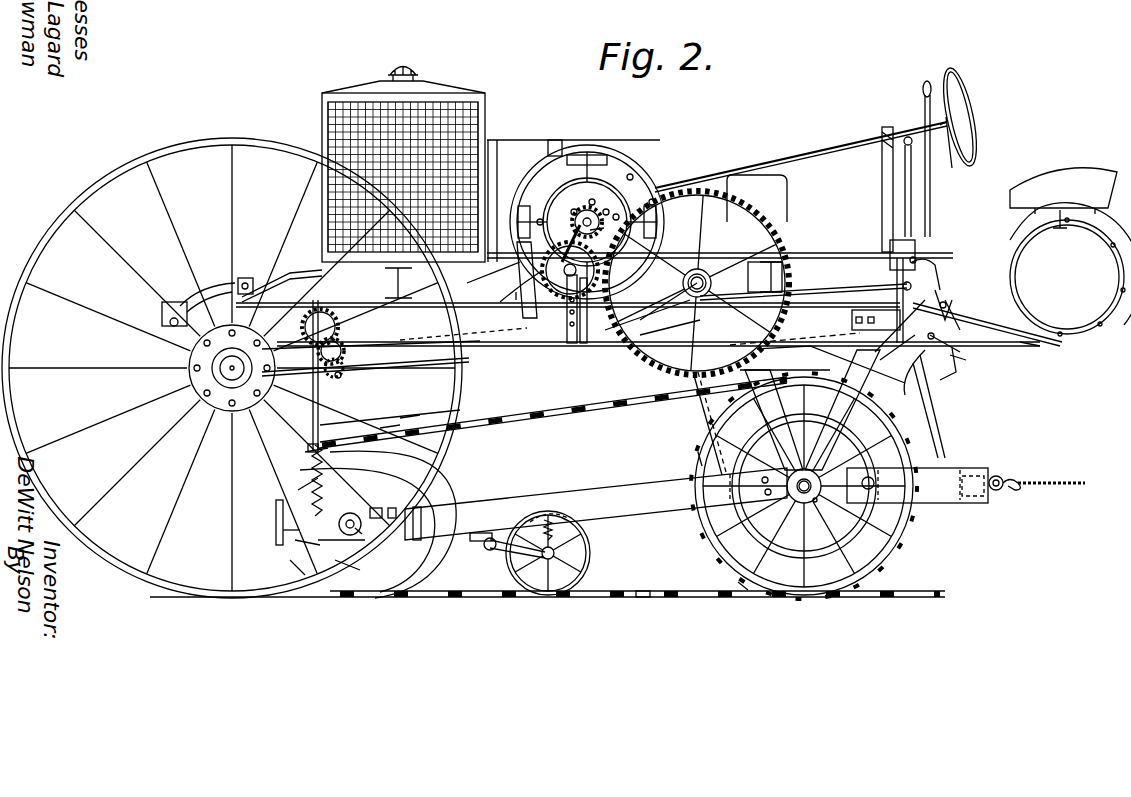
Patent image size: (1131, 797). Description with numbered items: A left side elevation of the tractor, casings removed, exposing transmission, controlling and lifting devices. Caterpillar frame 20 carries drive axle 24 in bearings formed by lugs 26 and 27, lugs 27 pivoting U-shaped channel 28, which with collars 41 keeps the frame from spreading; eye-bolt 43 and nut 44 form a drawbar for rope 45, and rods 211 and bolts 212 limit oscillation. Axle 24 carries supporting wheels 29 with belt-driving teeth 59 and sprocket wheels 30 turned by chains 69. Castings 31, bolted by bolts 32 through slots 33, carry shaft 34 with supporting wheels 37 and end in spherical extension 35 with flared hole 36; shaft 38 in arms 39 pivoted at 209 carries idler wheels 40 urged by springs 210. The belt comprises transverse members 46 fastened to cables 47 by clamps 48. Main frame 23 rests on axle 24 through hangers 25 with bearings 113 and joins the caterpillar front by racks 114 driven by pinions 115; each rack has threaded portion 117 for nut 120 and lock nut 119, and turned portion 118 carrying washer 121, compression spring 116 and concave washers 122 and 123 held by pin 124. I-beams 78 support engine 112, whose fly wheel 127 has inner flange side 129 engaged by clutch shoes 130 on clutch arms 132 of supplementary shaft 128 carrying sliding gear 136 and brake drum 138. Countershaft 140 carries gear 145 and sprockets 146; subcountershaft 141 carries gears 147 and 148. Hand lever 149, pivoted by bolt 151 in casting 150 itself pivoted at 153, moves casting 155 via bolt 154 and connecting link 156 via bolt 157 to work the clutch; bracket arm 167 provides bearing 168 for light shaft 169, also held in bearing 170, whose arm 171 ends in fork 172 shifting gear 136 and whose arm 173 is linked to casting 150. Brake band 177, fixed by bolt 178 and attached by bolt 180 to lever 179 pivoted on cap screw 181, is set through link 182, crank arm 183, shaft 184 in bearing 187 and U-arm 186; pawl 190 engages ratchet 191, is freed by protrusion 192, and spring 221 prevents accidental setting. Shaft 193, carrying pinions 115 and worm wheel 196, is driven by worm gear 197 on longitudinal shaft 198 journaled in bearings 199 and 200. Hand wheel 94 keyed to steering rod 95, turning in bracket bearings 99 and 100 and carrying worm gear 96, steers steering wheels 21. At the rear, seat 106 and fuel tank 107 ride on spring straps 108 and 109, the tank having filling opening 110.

The caterpillar frame 20 is at (466, 528).
The steering wheels 21 is at (232, 600).
The main frame member 23 is at (495, 347).
The drive axle 24 is at (800, 492).
The bracket 25 is at (768, 432).
The lug 26 is at (748, 520).
The lug 27 is at (838, 494).
The U-shaped channel 28 is at (945, 503).
The supporting wheel 29 is at (700, 458).
The drive sprocket wheel 30 is at (712, 441).
The casting 31 is at (358, 532).
The bolt 32 is at (382, 506).
The elongated slot 33 is at (448, 484).
The axial shaft 34 is at (352, 566).
The extension 35 is at (278, 532).
The vertical circular hole 36 is at (347, 516).
The supporting wheel 37 is at (404, 482).
The axial shaft 38 is at (562, 518).
The arm 39 is at (510, 533).
The idler wheel 40 is at (592, 553).
The collar 41 is at (340, 541).
The eye-bolt 43 is at (998, 476).
The nut 44 is at (1006, 490).
The rope 45 is at (1040, 481).
The transverse member 46 is at (513, 600).
The wire cable 47 is at (440, 594).
The clamp 48 is at (642, 592).
The tooth 59 is at (740, 585).
The chain 69 is at (700, 410).
The I-beam 78 is at (398, 298).
The hand wheel 94 is at (972, 85).
The steering rod 95 is at (800, 150).
The worm gear 96 is at (246, 277).
The bracket bearing 99 is at (290, 272).
The bracket bearing 100 is at (887, 126).
The operator's seat 106 is at (1060, 182).
The fuel tank 107 is at (1012, 268).
The spring strap 108 is at (982, 320).
The spring strap 109 is at (1108, 252).
The opening 110 is at (1054, 228).
The engine 112 is at (498, 188).
The short bearing 113 is at (815, 503).
The rack 114 is at (320, 396).
The pinion 115 is at (323, 316).
The spring 116 is at (325, 482).
The threaded portion 117 is at (360, 420).
The turned portion 118 is at (298, 500).
The lock nut 119 is at (410, 415).
The nut 120 is at (390, 425).
The flat washer 121 is at (308, 452).
The concave washer 122 is at (276, 516).
The concave washer 123 is at (305, 541).
The pin 124 is at (295, 568).
The fly wheel 127 is at (606, 226).
The supplementary shaft 128 is at (630, 175).
The inner side of fly wheel flange 129 is at (574, 210).
The shoe 130 is at (520, 200).
The clutch arm 132 is at (606, 210).
The gear 136 is at (555, 140).
The brake drum 138 is at (592, 200).
The countershaft 140 is at (705, 272).
The subcountershaft 141 is at (584, 346).
The gear 145 is at (790, 226).
The sprocket 146 is at (730, 303).
The gear 147 is at (516, 296).
The gear 148 is at (532, 320).
The hand lever 149 is at (922, 100).
The casting 150 is at (946, 306).
The bolt 151 is at (940, 372).
The pivot 153 is at (840, 350).
The bolt 154 is at (955, 380).
The casting 155 is at (912, 385).
The connecting link 156 is at (895, 355).
The bolt 157 is at (905, 376).
The bracket arm 167 is at (893, 243).
The bearing 168 is at (925, 255).
The light shaft 169 is at (800, 262).
The bearing 170 is at (660, 318).
The arm 171 is at (652, 200).
The fork 172 is at (572, 212).
The arm 173 is at (914, 210).
The brake band 177 is at (616, 215).
The bolt 178 is at (540, 219).
The lever 179 is at (522, 305).
The bolt 180 is at (527, 280).
The cap screw 181 is at (500, 272).
The link 182 is at (812, 296).
The crank arm 183 is at (903, 286).
The shaft 184 is at (825, 342).
The U-arm 186 is at (945, 275).
The bearing 187 is at (852, 318).
The pawl 190 is at (1040, 348).
The stationary ratchet 191 is at (960, 290).
The protrusion 192 is at (962, 360).
The shaft 193 is at (343, 350).
The worm wheel 196 is at (336, 340).
The worm gear 197 is at (342, 374).
The shaft 198 is at (420, 348).
The bearing 199 is at (395, 360).
The bearing 200 is at (680, 332).
The pivot 209 is at (490, 546).
The compression spring 210 is at (556, 536).
The rod 211 is at (938, 430).
The bolt 212 is at (942, 452).
The compression spring 221 is at (572, 345).